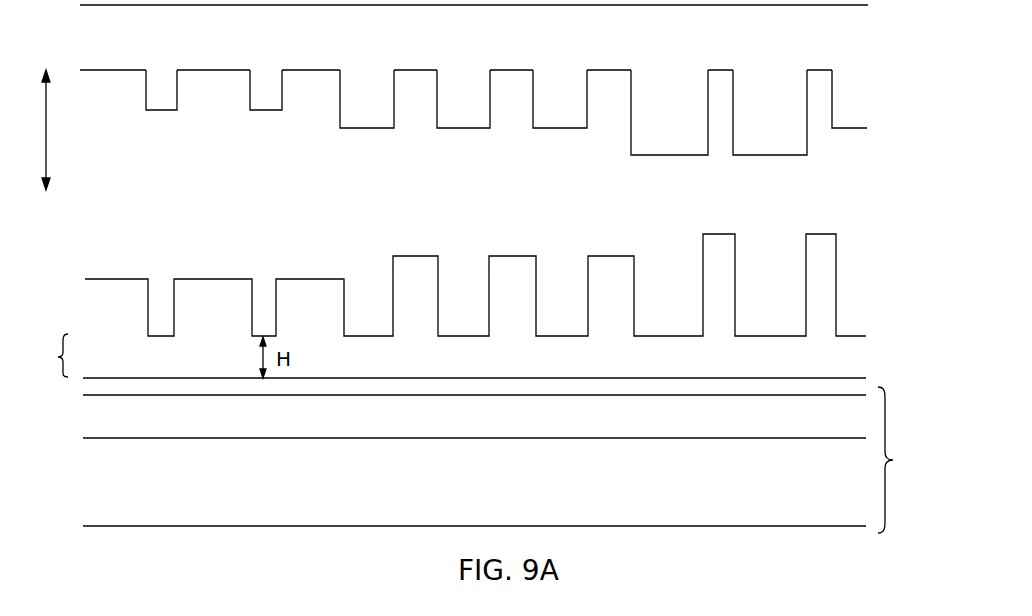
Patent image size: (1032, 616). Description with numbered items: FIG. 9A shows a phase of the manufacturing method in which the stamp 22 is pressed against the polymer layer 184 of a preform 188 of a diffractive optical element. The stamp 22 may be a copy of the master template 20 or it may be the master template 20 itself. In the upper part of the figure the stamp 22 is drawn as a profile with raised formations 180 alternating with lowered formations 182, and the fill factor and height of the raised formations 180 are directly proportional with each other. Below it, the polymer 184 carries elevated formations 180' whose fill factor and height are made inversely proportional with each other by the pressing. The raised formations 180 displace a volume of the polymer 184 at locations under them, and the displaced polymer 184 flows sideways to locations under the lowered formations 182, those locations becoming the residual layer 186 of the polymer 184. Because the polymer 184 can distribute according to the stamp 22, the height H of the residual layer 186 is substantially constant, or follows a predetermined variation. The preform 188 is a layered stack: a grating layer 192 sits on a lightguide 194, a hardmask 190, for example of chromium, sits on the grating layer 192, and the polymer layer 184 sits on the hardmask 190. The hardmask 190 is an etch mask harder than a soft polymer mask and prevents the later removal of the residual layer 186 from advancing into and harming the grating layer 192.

The master template 20 is at (474, 21).
The stamp 22 is at (495, 95).
The raised formations 180 is at (528, 127).
The lowered formations 182 is at (103, 69).
The elevated formations 180' is at (487, 271).
The polymer layer 184 is at (518, 374).
The residual layer 186 is at (42, 355).
The preform 188 is at (908, 460).
The hardmask 190 is at (80, 380).
The grating layer 192 is at (466, 428).
The lightguide 194 is at (461, 493).